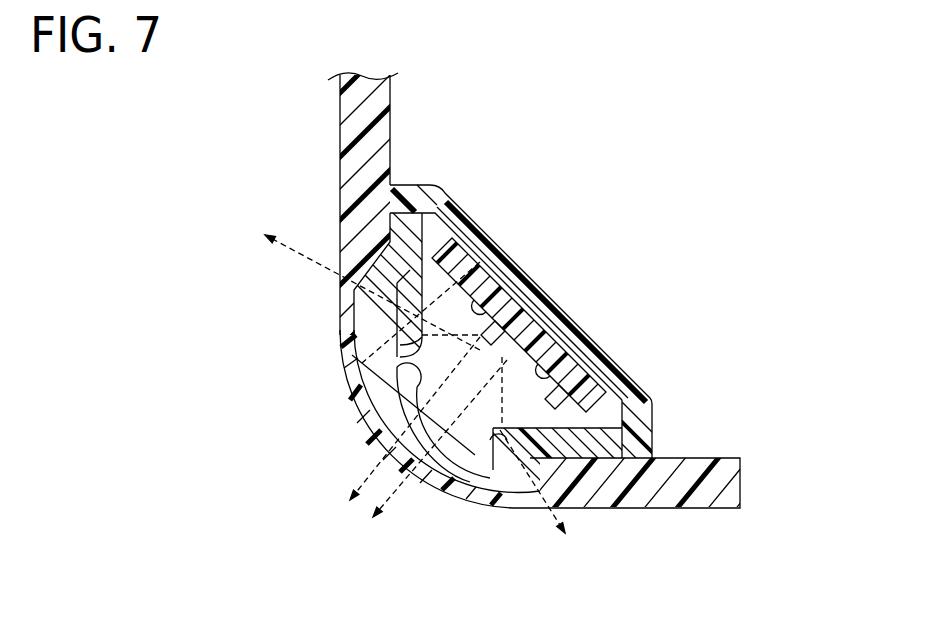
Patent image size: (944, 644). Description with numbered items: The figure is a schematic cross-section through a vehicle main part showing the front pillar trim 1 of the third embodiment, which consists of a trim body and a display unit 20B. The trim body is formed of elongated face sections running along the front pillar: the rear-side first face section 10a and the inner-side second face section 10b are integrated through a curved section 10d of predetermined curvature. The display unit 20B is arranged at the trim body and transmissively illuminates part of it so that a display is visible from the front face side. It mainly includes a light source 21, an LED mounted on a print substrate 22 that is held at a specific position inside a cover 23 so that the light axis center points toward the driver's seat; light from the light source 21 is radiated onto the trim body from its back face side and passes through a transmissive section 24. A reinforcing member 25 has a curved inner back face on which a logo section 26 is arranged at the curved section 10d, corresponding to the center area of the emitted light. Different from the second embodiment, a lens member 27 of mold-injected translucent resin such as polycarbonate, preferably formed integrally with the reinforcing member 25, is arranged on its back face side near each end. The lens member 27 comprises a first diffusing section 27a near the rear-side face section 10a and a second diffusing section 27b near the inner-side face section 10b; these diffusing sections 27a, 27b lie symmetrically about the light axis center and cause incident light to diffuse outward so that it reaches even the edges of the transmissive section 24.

The front pillar trim 1 is at (298, 118).
The first face section 10a is at (650, 510).
The second face section 10b is at (342, 180).
The curved section 10d is at (362, 434).
The display unit 20B is at (642, 135).
The light source 21 is at (535, 281).
The print substrate 22 is at (595, 375).
The cover 23 is at (588, 322).
The transmissive section 24 is at (478, 470).
The reinforcing member 25 is at (650, 405).
The logo section 26 is at (358, 388).
The lens member 27 is at (430, 277).
The first diffusing section 27a is at (510, 480).
The second diffusing section 27b is at (398, 348).